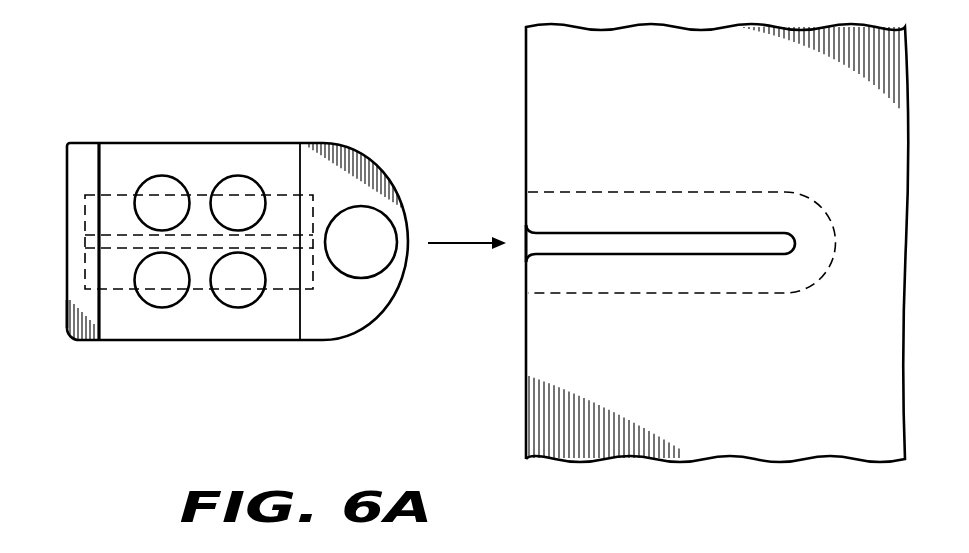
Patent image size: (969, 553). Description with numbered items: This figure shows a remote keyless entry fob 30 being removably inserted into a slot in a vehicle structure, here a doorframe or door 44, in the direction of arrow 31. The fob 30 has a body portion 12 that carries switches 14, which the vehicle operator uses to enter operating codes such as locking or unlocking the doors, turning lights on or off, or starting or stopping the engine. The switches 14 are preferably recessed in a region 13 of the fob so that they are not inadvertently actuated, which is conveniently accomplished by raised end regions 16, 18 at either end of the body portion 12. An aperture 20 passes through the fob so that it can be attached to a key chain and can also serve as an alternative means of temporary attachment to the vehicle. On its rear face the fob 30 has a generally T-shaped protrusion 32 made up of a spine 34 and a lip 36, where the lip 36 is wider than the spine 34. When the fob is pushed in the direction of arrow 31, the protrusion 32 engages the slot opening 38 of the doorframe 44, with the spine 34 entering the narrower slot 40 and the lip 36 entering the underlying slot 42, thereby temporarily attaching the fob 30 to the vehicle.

The body portion 12 is at (280, 341).
The region 13 is at (118, 156).
The switches 14 is at (163, 175).
The raised end region 16 is at (78, 153).
The raised end region 18 is at (345, 327).
The aperture 20 is at (378, 258).
The keyless entry fob 30 is at (380, 124).
The arrow 31 is at (463, 243).
The T-shaped protrusion 32 is at (48, 291).
The spine 34 is at (88, 238).
The lip 36 is at (291, 193).
The slot opening 38 is at (510, 260).
The narrower slot 40 is at (642, 242).
The underlying slot 42 is at (723, 207).
The doorframe 44 is at (541, 60).